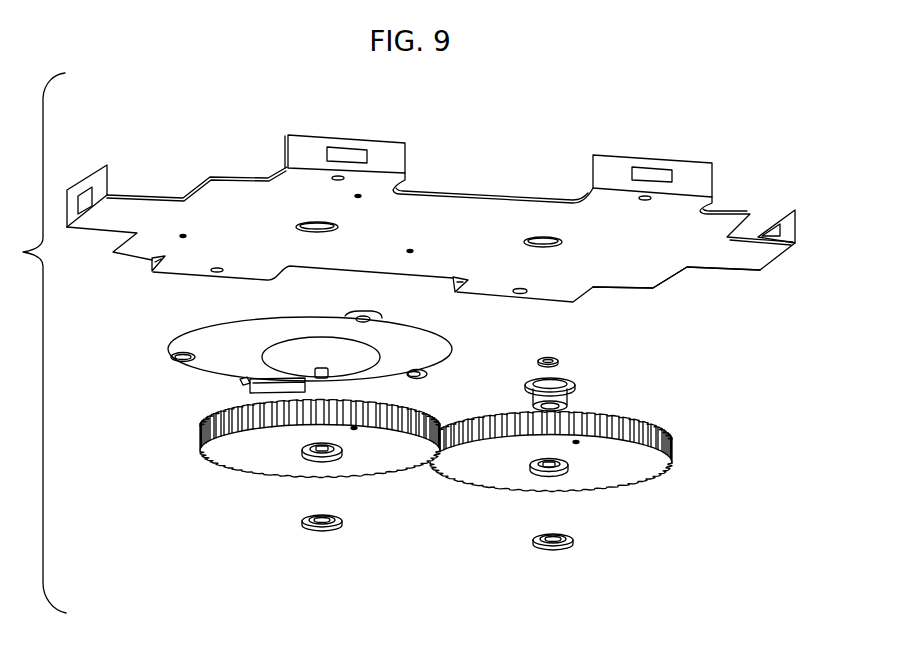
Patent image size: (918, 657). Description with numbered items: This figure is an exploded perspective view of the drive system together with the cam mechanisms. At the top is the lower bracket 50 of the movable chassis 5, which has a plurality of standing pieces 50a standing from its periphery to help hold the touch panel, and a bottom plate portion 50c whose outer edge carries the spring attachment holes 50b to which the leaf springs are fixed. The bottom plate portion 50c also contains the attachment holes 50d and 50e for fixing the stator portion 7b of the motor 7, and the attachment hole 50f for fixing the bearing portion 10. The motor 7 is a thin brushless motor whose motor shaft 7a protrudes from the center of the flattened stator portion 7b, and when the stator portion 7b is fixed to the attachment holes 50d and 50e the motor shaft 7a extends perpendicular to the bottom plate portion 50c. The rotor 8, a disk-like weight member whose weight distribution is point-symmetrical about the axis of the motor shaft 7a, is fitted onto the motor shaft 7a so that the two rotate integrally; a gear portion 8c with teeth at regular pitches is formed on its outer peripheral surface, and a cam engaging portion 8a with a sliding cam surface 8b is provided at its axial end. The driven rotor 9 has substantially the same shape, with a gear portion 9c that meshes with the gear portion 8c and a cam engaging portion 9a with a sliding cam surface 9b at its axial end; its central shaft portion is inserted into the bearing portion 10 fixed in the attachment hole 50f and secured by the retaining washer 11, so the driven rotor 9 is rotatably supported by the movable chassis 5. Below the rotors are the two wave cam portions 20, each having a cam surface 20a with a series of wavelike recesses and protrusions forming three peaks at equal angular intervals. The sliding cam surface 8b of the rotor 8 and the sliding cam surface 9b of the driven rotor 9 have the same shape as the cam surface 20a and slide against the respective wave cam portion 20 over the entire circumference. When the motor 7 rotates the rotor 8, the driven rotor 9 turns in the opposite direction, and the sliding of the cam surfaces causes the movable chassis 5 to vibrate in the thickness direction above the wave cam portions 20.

The movable chassis 5 is at (255, 343).
The lower bracket 50 is at (462, 190).
The standing pieces 50a is at (787, 225).
The spring attachment holes 50b is at (333, 178).
The bottom plate portion 50c is at (652, 263).
The attachment hole 50d is at (313, 230).
The attachment hole 50e is at (182, 237).
The attachment hole 50f is at (537, 250).
The motor 7 is at (213, 372).
The motor shaft 7a is at (316, 368).
The stator portion 7b is at (427, 350).
The rotor 8 is at (287, 462).
The cam engaging portion 8a is at (280, 470).
The sliding cam surface 8b is at (347, 460).
The gear portion 8c is at (210, 413).
The driven rotor 9 is at (570, 457).
The cam engaging portion 9a is at (538, 460).
The sliding cam surface 9b is at (567, 470).
The gear portion 9c is at (652, 425).
The bearing portion 10 is at (566, 395).
The retaining washer 11 is at (560, 362).
The wave cam portion 20 is at (334, 524).
The cam surface 20a is at (321, 514).